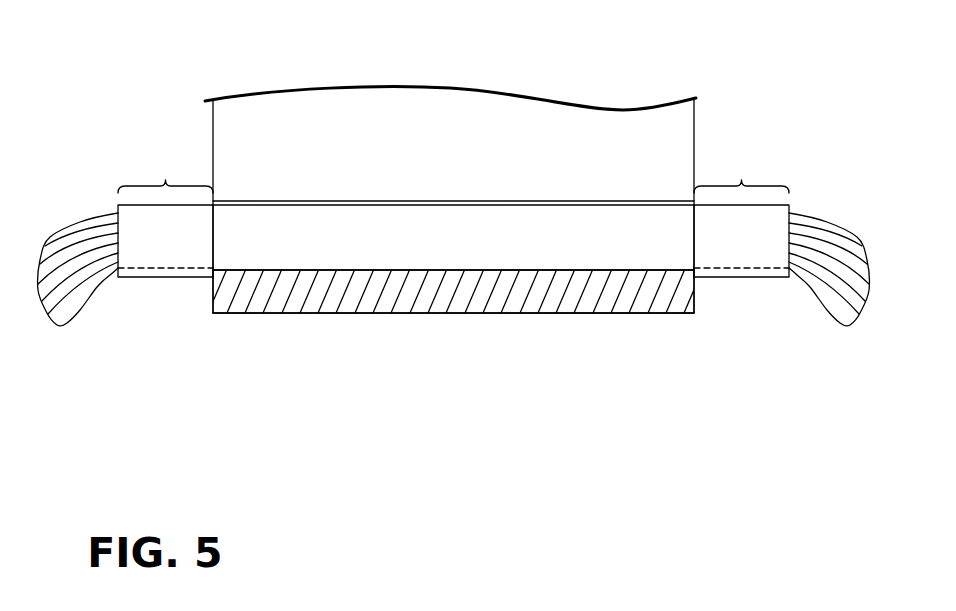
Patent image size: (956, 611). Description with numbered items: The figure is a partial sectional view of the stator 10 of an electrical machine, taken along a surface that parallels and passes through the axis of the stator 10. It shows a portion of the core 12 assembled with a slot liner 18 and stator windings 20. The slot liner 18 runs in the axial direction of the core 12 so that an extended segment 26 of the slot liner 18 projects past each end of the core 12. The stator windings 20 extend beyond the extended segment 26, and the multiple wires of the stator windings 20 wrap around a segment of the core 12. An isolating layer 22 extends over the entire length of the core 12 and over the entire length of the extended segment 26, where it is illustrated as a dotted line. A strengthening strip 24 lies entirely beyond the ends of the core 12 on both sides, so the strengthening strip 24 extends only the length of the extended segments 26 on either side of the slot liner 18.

The stator 10 is at (199, 35).
The core 12 is at (400, 313).
The slot liner 18 is at (243, 242).
The stator windings 20 is at (88, 305).
The isolating layer 22 is at (535, 232).
The strengthening strip 24 is at (147, 250).
The extended segment 26 is at (453, 173).